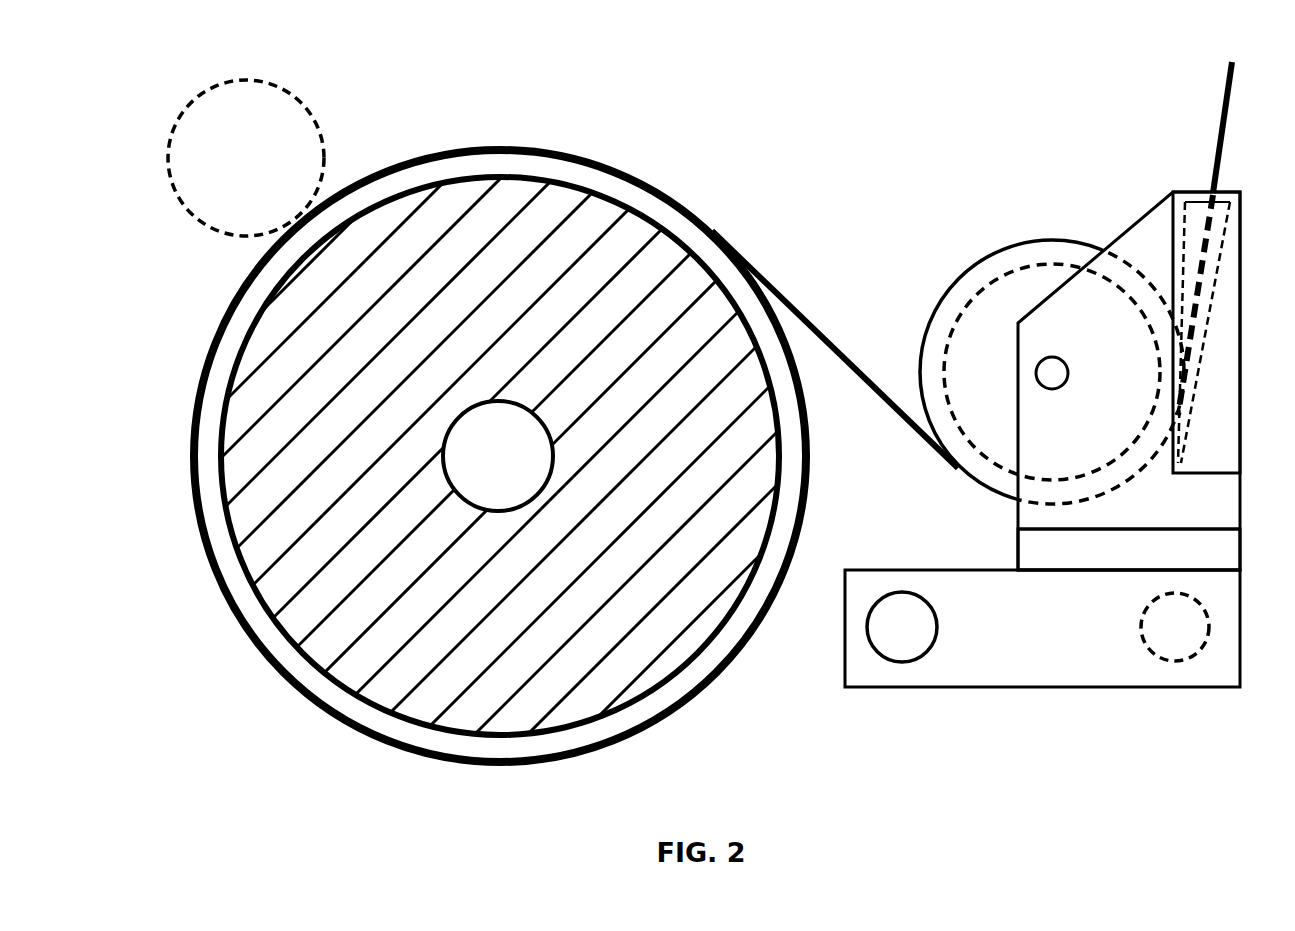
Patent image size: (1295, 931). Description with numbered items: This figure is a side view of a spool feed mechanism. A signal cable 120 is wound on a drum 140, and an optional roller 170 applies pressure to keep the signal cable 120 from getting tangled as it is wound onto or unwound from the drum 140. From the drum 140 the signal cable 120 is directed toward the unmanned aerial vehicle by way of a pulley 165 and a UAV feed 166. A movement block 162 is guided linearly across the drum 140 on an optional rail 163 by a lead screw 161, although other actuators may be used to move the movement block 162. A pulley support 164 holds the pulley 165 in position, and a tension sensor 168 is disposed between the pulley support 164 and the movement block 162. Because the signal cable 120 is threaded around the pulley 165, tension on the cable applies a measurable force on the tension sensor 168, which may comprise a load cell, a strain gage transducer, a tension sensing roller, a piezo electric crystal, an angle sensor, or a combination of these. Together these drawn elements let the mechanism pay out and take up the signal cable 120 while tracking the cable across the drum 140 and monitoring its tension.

The signal cable 120 is at (790, 302).
The drum 140 is at (494, 335).
The lead screw 161 is at (881, 640).
The movement block 162 is at (1004, 634).
The rail 163 is at (1154, 640).
The pulley support 164 is at (1154, 517).
The pulley 165 is at (961, 379).
The UAV feed 166 is at (1186, 466).
The tension sensor 168 is at (1107, 560).
The roller 170 is at (225, 170).